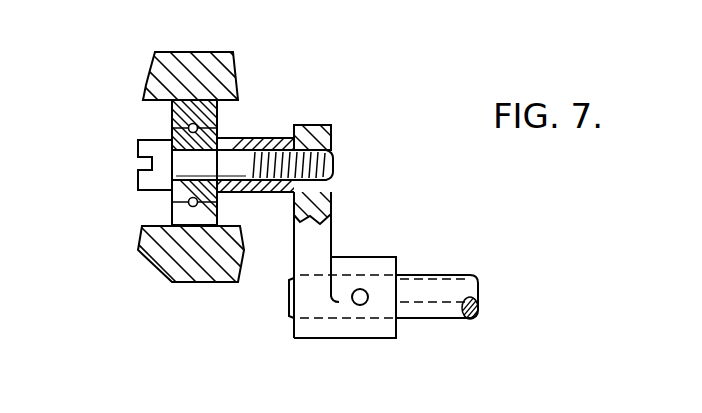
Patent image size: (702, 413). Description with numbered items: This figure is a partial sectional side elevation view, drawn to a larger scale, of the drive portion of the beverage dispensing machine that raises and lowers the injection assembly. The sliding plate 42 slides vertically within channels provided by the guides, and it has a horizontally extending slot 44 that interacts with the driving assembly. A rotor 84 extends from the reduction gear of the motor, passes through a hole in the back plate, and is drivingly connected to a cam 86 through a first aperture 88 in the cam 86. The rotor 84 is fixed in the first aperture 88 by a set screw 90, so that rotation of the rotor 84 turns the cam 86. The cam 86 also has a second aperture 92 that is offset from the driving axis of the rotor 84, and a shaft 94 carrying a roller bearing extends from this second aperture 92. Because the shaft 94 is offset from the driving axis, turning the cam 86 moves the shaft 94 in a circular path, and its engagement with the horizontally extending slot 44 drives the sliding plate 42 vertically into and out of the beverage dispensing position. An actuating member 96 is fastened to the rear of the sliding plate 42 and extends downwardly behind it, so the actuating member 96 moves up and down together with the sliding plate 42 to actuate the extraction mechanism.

The sliding plate 42 is at (216, 247).
The horizontally extending slot 44 is at (120, 110).
The rotor 84 is at (447, 272).
The cam 86 is at (343, 228).
The first aperture 88 is at (306, 322).
The set screw 90 is at (356, 306).
The second aperture 92 is at (316, 128).
The shaft 94 is at (337, 163).
The actuating member 96 is at (183, 110).